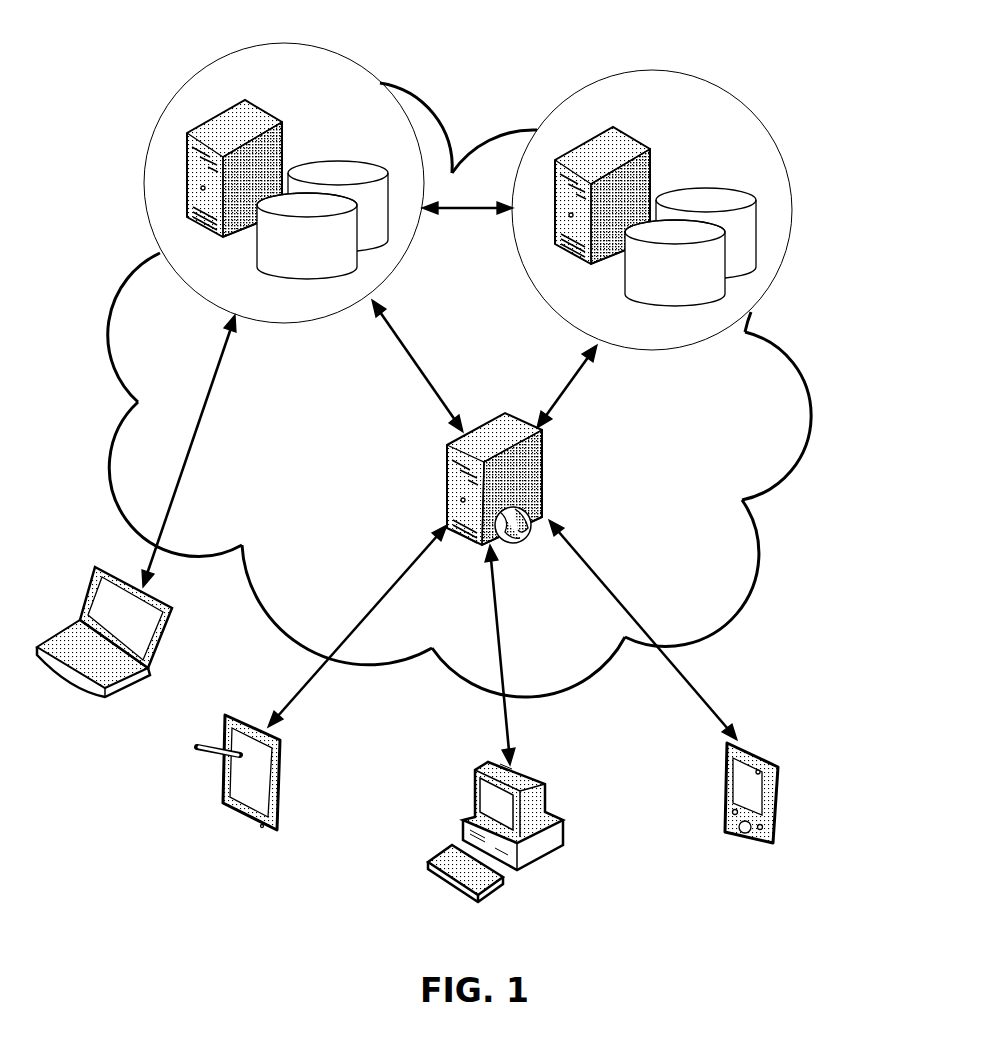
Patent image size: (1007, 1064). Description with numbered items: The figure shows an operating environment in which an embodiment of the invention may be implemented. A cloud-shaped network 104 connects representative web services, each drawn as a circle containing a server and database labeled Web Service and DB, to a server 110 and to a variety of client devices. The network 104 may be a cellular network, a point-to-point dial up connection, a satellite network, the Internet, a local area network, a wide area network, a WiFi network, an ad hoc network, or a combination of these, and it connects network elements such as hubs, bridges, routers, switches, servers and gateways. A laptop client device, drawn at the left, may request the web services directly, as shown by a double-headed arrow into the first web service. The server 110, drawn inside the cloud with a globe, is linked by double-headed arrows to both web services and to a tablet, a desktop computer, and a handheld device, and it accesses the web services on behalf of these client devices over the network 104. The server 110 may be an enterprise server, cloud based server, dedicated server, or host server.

The network 104 is at (803, 457).
The server 110 is at (477, 425).